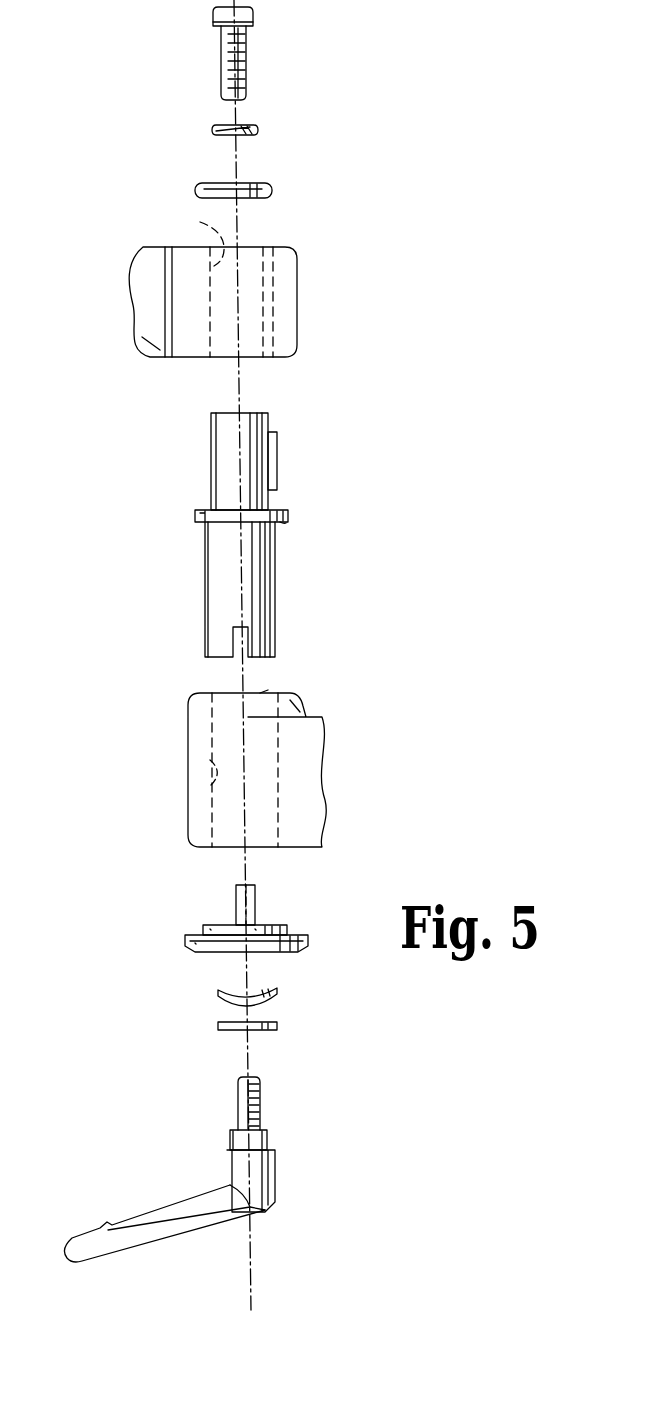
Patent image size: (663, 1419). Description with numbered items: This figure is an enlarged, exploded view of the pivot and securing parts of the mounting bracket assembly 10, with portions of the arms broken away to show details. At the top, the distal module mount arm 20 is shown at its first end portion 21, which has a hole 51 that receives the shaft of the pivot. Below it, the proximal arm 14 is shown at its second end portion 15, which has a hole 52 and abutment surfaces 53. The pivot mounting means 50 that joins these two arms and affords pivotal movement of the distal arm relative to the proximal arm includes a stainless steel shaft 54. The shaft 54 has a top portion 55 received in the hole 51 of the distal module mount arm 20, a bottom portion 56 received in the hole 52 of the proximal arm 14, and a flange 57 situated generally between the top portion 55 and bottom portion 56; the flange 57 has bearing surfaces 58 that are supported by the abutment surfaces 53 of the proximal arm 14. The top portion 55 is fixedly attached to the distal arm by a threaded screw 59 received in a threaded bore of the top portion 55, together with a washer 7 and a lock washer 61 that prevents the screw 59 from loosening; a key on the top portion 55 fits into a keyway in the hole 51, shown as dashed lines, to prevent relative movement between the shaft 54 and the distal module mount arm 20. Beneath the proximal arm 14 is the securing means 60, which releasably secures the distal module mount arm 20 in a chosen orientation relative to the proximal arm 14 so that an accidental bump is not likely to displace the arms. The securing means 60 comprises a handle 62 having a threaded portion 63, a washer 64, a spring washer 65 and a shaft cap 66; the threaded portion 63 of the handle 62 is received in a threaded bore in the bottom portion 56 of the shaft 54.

The mounting bracket assembly 10 is at (99, 610).
The threaded screw 59 is at (222, 47).
The lock washer 61 is at (242, 128).
The washer 7 is at (250, 183).
The distal module mount arm 20 is at (296, 263).
The hole 51 is at (196, 221).
The first end portion 21 is at (150, 340).
The pivot mounting means 50 is at (263, 522).
The shaft 54 is at (208, 497).
The top portion 55 is at (245, 431).
The flange 57 is at (196, 516).
The bearing surfaces 58 is at (283, 523).
The bottom portion 56 is at (253, 583).
The proximal arm 14 is at (320, 798).
The second end portion 15 is at (300, 705).
The abutment surfaces 53 is at (265, 693).
The hole 52 is at (210, 768).
The shaft cap 66 is at (256, 912).
The spring washer 65 is at (268, 992).
The washer 64 is at (265, 1031).
The securing means 60 is at (212, 1169).
The threaded portion 63 is at (238, 1097).
The handle 62 is at (217, 1192).